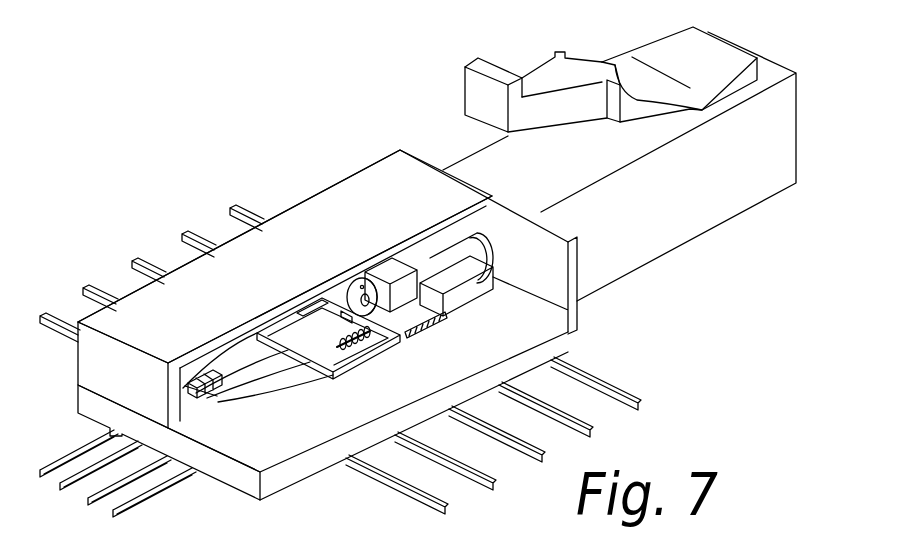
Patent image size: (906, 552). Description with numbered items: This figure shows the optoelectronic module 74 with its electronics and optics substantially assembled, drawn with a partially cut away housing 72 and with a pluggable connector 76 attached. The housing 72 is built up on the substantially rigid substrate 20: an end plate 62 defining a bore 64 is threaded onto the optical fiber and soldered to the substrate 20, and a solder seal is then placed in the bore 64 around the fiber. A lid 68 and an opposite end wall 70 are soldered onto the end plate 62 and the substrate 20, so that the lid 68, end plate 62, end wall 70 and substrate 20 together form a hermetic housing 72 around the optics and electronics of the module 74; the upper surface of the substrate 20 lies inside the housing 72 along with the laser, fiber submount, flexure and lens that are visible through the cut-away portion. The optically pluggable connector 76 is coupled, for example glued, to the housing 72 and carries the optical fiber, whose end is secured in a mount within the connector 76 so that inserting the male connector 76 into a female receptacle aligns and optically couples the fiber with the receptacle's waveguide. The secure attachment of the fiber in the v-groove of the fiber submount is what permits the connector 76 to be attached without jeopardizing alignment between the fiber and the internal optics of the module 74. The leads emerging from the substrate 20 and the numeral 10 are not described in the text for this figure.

The optical pickup unit 10 is at (240, 427).
The substrate 20 is at (300, 490).
The end plate 62 is at (574, 281).
The bore 64 is at (478, 258).
The lid 68 is at (187, 283).
The end wall 70 is at (87, 362).
The housing 72 is at (392, 138).
The optoelectronic module 74 is at (283, 131).
The pluggable connector 76 is at (668, 55).